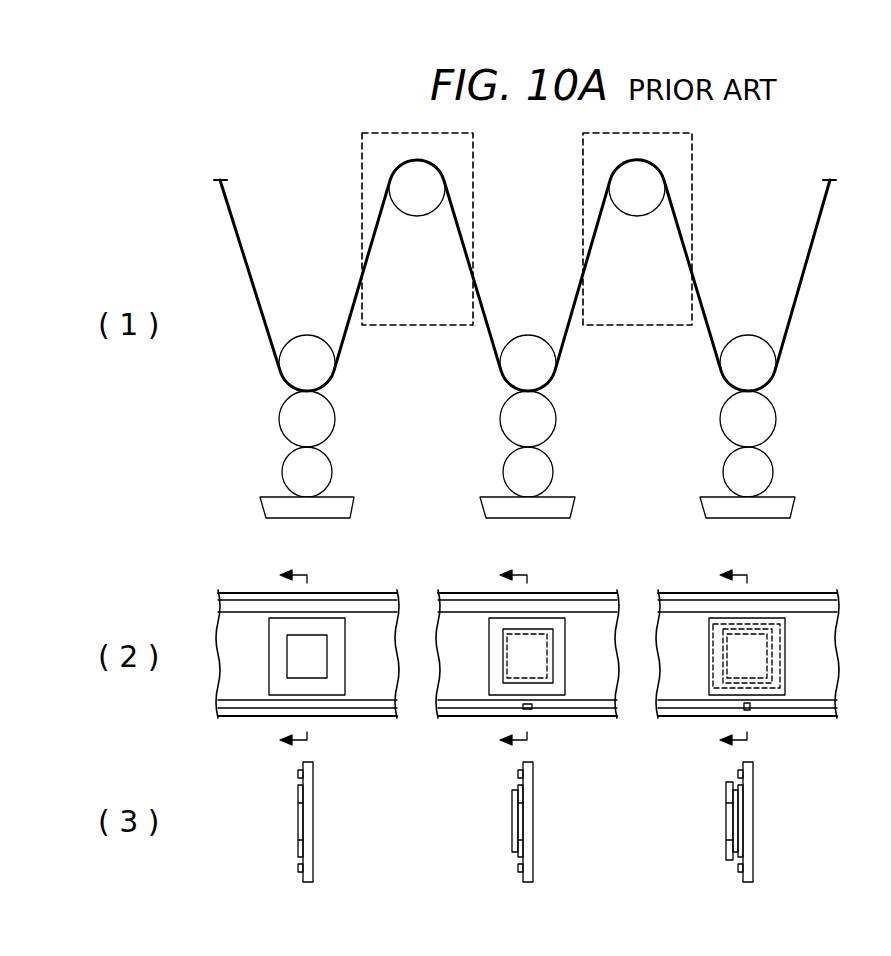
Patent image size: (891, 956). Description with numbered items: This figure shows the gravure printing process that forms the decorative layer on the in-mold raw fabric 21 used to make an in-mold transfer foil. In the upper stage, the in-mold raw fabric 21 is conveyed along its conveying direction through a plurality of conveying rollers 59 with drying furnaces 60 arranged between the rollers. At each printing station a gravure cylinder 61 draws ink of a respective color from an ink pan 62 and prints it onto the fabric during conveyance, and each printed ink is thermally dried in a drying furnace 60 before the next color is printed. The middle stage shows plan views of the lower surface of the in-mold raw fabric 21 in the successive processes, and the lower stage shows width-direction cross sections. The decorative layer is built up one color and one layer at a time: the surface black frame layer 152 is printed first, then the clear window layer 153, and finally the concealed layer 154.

The in-mold raw fabric 21 is at (240, 230).
The conveying roller 59 is at (307, 342).
The drying furnace 60 is at (362, 162).
The gravure cylinder 61 is at (288, 418).
The ink pan 62 is at (265, 503).
The surface black frame layer 152 is at (282, 668).
The clear window layer 153 is at (503, 668).
The concealed layer 154 is at (720, 668).